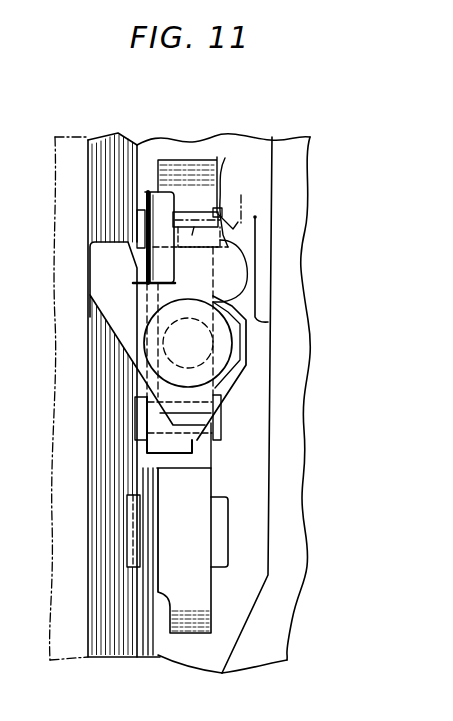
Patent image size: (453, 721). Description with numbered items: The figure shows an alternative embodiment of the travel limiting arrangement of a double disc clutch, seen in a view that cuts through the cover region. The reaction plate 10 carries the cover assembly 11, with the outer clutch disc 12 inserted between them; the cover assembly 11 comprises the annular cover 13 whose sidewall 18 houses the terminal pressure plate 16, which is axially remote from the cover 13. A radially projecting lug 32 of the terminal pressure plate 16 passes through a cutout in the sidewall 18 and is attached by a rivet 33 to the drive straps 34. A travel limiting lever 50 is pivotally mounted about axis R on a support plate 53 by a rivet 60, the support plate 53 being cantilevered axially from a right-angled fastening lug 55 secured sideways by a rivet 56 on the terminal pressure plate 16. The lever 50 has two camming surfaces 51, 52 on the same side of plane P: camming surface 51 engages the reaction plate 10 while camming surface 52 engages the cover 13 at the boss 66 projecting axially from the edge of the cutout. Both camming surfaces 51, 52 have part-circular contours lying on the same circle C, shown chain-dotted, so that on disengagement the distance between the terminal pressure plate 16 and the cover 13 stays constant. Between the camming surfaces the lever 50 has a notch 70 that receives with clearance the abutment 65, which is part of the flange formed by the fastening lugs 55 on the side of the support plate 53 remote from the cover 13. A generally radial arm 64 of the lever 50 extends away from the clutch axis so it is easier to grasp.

The reaction plate 10 is at (50, 163).
The cover assembly 11 is at (318, 178).
The outer clutch disc 12 is at (78, 597).
The annular cover 13 is at (318, 292).
The terminal pressure plate 16 is at (265, 131).
The sidewall 18 is at (302, 407).
The radially projecting lug 32 is at (197, 520).
The rivet 33 is at (222, 555).
The drive straps 34 is at (153, 627).
The travel limiting lever 50 is at (114, 355).
The camming surface 51 is at (100, 263).
The camming surface 52 is at (240, 267).
The support plate 53 is at (252, 349).
The fastening lug 55 is at (140, 197).
The rivet 56 is at (216, 428).
The rivet 60 is at (158, 372).
The arm 64 is at (226, 452).
The abutment 65 is at (146, 231).
The boss 66 is at (256, 215).
The notch 70 is at (166, 225).